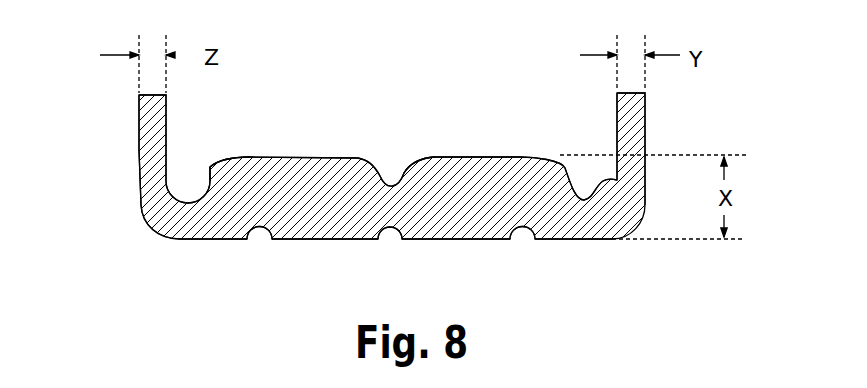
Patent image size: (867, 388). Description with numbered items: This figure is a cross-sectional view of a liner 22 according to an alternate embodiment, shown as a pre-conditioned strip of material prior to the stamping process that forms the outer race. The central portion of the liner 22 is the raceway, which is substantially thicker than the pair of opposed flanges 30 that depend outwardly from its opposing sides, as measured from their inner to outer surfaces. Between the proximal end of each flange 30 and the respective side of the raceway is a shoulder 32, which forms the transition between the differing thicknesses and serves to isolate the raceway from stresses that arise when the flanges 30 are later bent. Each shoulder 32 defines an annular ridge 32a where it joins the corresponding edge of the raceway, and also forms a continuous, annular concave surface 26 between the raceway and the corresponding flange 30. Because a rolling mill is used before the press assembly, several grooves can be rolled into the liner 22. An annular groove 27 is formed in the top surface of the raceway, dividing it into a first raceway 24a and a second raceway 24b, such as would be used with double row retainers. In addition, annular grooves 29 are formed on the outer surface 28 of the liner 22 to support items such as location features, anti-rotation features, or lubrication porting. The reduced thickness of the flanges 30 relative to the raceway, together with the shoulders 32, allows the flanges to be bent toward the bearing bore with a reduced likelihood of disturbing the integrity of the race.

The liner 22 is at (704, 142).
The first raceway 24a is at (305, 156).
The second raceway 24b is at (490, 157).
The annular concave surface 26 is at (612, 182).
The annular groove 27 is at (393, 178).
The outer surface 28 is at (310, 240).
The annular grooves 29 is at (257, 234).
The flanges 30 is at (138, 140).
The shoulder 32 is at (213, 203).
The annular ridge 32a is at (213, 158).